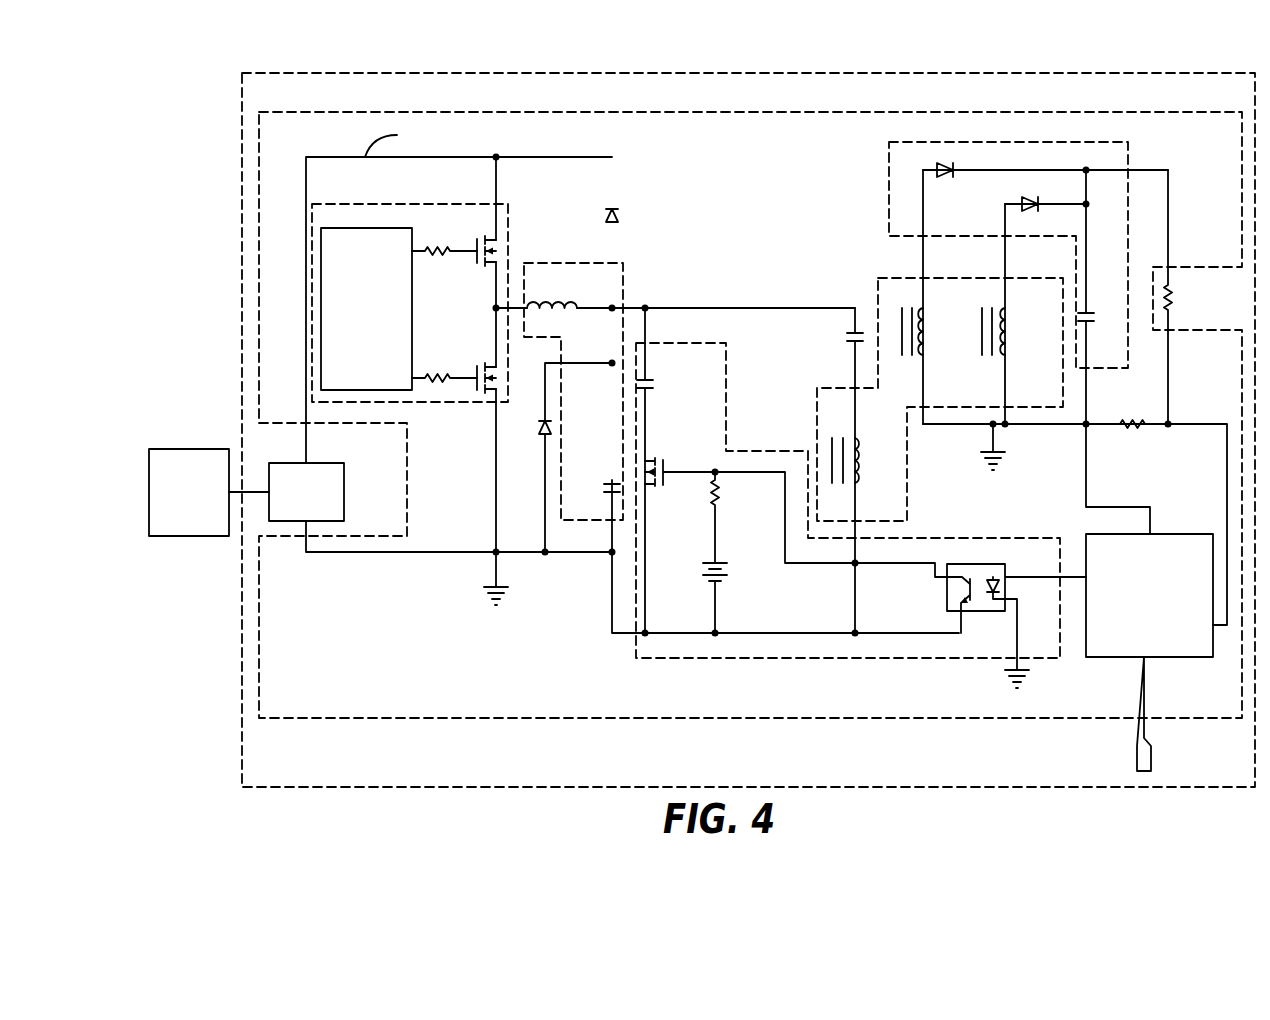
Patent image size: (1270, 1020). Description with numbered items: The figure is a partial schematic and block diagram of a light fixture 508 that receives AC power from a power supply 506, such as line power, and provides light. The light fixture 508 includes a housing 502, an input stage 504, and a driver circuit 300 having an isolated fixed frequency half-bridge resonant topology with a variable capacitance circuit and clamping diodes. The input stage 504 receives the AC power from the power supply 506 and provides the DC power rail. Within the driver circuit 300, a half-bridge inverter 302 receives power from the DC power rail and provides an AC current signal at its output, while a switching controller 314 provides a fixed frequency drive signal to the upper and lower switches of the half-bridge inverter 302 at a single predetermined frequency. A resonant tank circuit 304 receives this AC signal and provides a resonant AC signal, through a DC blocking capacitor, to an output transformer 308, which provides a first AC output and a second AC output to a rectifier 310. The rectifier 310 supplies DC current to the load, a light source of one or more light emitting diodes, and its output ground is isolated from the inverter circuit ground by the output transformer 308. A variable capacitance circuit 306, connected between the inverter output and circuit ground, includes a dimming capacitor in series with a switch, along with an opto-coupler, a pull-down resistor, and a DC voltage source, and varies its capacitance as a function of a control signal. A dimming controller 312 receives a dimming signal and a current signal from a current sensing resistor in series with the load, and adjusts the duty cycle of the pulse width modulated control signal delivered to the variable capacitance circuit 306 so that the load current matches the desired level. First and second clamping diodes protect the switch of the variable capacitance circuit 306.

The light fixture 508 is at (202, 116).
The housing 502 is at (563, 73).
The driver circuit 300 is at (600, 112).
The half-bridge inverter 302 is at (362, 204).
The resonant tank circuit 304 is at (540, 263).
The variable capacitance circuit 306 is at (726, 362).
The output transformer 308 is at (878, 283).
The rectifier 310 is at (889, 177).
The dimming controller 312 is at (1183, 534).
The switching controller 314 is at (412, 305).
The input stage 504 is at (322, 463).
The power supply 506 is at (190, 449).